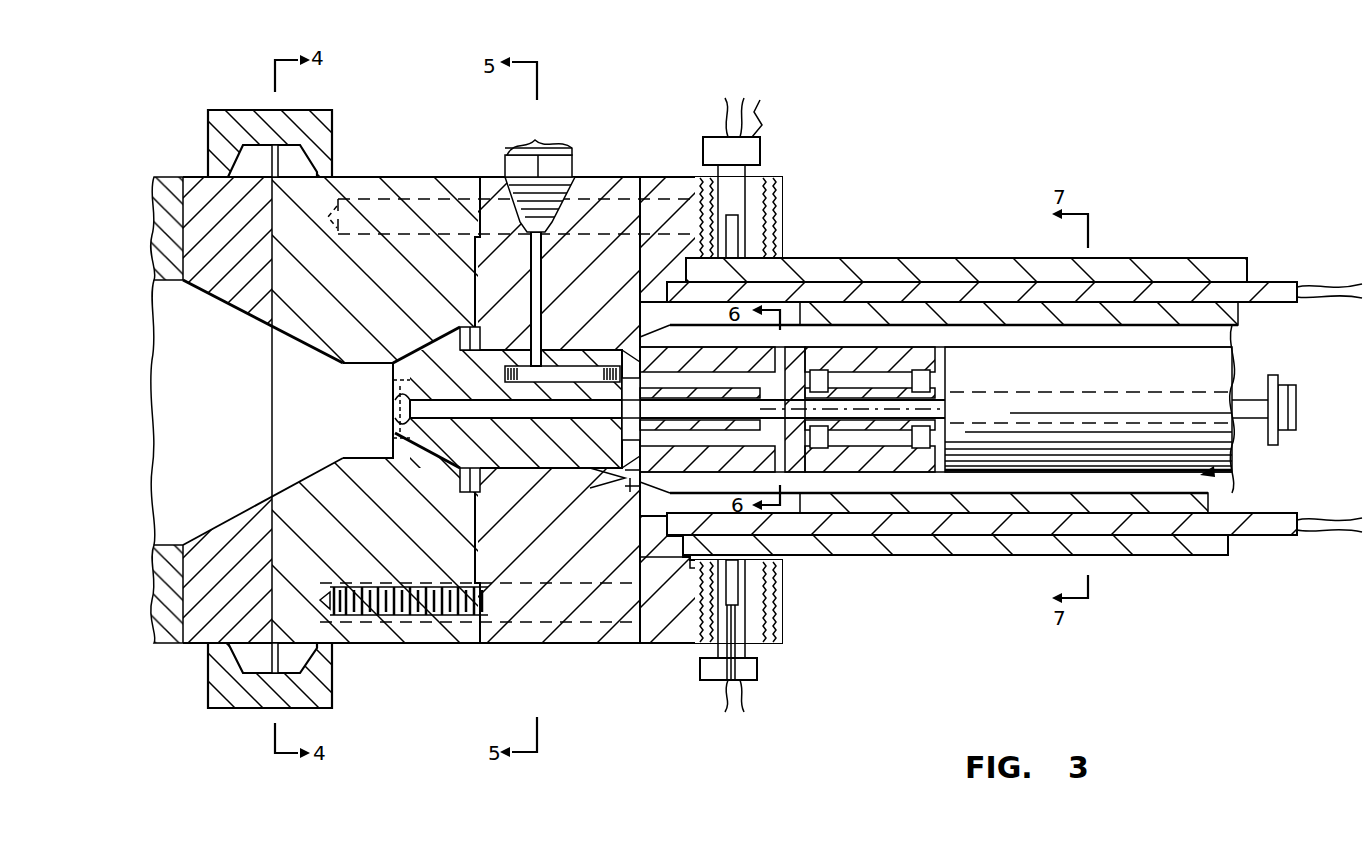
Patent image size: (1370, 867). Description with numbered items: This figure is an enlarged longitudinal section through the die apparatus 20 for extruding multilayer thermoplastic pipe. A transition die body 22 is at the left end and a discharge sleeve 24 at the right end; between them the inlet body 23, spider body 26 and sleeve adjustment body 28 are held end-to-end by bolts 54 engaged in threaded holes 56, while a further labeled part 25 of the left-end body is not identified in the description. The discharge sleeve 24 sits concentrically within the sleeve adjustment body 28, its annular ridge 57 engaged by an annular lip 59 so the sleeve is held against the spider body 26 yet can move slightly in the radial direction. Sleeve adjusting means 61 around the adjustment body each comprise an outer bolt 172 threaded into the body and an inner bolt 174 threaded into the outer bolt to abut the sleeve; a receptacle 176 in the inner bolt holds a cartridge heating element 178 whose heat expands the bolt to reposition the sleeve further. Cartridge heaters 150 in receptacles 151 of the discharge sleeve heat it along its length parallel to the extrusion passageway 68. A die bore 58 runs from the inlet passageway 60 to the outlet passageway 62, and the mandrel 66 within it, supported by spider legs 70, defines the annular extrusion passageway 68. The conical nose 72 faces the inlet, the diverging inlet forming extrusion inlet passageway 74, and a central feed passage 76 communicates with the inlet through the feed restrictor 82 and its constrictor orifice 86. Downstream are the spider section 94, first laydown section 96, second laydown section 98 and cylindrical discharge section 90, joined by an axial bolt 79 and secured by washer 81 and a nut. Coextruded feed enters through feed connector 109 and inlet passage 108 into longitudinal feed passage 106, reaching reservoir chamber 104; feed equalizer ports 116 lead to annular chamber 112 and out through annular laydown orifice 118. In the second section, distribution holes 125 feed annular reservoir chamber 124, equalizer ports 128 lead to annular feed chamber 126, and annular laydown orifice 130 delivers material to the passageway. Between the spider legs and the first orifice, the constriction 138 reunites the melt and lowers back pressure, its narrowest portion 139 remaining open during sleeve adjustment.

The die apparatus 20 is at (616, 177).
The transition die body 22 is at (192, 644).
The inlet body 23 is at (368, 644).
The discharge sleeve 24 is at (1208, 560).
The lower flange 25 is at (232, 709).
The spider body 26 is at (570, 644).
The sleeve adjustment body 28 is at (674, 645).
The bolts 54 is at (440, 617).
The threaded holes 56 is at (432, 198).
The annular ridge 57 is at (645, 590).
The die bore 58 is at (260, 439).
The annular lip 59 is at (694, 574).
The inlet passageway 60 is at (230, 364).
The sleeve adjusting means 61 is at (763, 390).
The outlet passageway 62 is at (1246, 336).
The mandrel 66 is at (888, 344).
The extrusion passageway 68 is at (1038, 350).
The spider legs 70 is at (462, 486).
The conical nose 72 is at (424, 345).
The extrusion inlet passageway 74 is at (410, 345).
The central feed passage 76 is at (406, 445).
The bolt 79 is at (1248, 392).
The washer 81 is at (1280, 440).
The feed restrictor 82 is at (386, 396).
The constrictor orifice 86 is at (394, 414).
The mandrel discharge section 90 is at (1214, 474).
The spider section 94 is at (560, 466).
The first laydown section 96 is at (702, 472).
The second laydown section 98 is at (872, 474).
The reservoir chamber 104 is at (628, 345).
The longitudinal feed passage 106 is at (556, 366).
The inlet passage 108 is at (544, 272).
The feed connector 109 is at (538, 140).
The annular chamber 112 is at (770, 344).
The feed equalizer ports 116 is at (728, 386).
The annular laydown orifice 118 is at (790, 348).
The annular reservoir chamber 124 is at (812, 468).
The distribution holes 125 is at (814, 412).
The annular feed chamber 126 is at (944, 372).
The equalizer ports 128 is at (942, 416).
The annular laydown orifice 130 is at (948, 476).
The extrusion passageway constriction 138 is at (612, 490).
The narrowest section of constriction 139 is at (632, 500).
The electrical resistance cartridge elements 150 is at (1168, 286).
The receptacles 151 is at (1112, 300).
The outer bolts 172 is at (766, 186).
The inner bolts 174 is at (770, 216).
The receptacle 176 is at (760, 152).
The heating element 178 is at (774, 242).